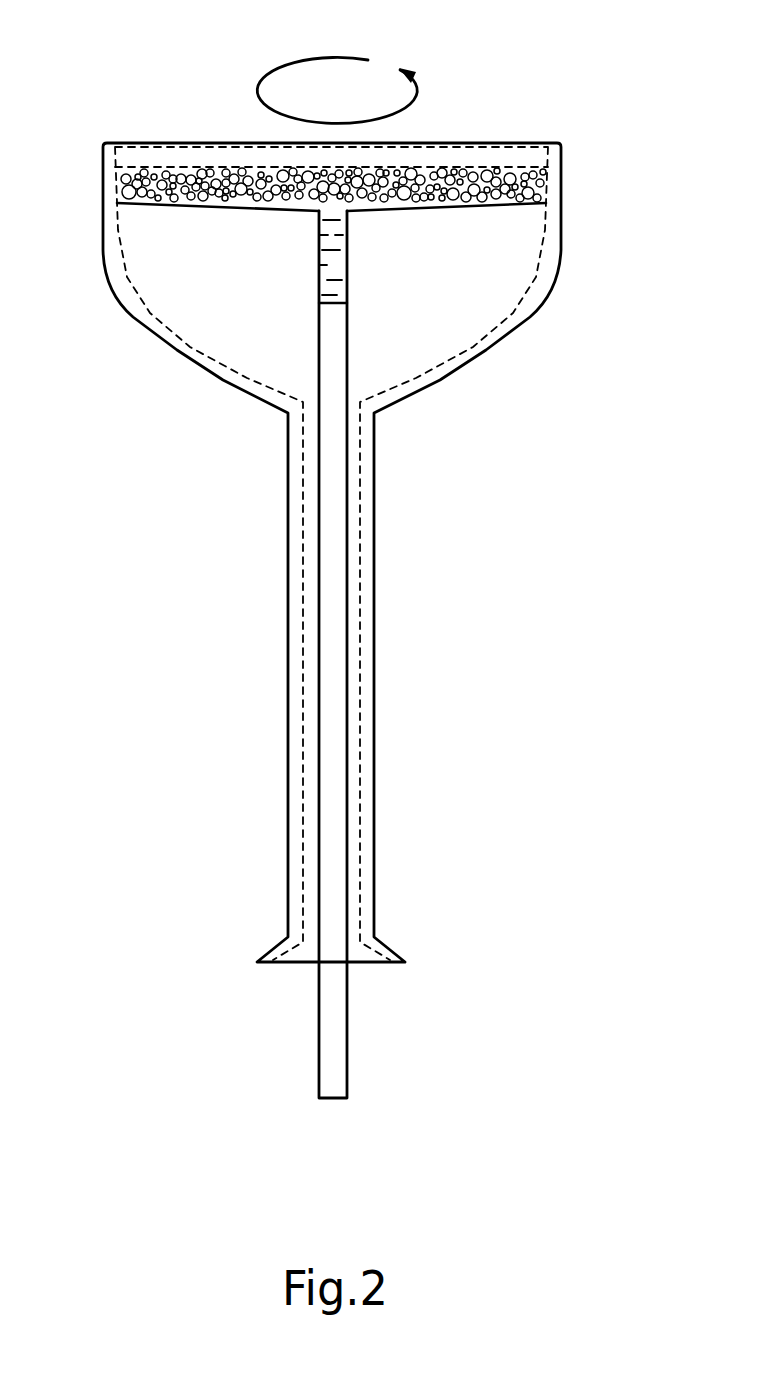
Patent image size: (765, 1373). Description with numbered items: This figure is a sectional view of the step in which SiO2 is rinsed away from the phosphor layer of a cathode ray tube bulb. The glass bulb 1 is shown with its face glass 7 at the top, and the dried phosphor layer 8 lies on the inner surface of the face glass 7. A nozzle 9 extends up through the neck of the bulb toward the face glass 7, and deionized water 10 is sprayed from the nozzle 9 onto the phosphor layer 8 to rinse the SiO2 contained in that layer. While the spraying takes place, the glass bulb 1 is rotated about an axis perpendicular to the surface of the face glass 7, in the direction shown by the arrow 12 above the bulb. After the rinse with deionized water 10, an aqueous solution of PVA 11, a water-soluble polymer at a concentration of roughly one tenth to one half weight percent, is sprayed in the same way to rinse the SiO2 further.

The glass bulb 1 is at (547, 292).
The face glass 7 is at (447, 168).
The phosphor layer 8 is at (143, 193).
The nozzle 9 is at (337, 525).
The deionized water 10 is at (211, 344).
The aqueous solution of PVA 11 is at (323, 266).
The arrow 12 is at (283, 66).